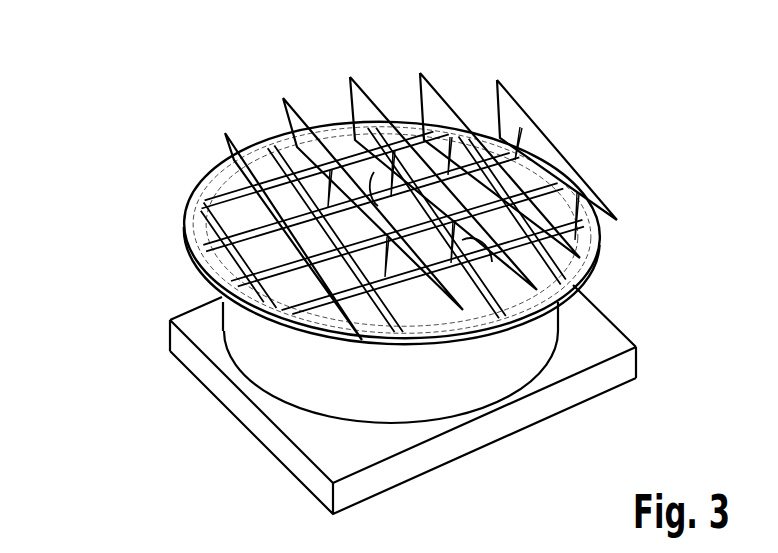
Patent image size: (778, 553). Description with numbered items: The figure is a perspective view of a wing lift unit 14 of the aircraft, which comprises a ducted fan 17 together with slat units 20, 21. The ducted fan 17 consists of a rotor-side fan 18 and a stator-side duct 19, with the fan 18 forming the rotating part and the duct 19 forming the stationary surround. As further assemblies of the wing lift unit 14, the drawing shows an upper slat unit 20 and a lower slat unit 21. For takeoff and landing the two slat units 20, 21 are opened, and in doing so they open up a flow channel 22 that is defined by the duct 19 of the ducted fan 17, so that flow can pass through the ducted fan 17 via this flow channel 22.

The wing lift unit 14 is at (600, 103).
The ducted fan 17 is at (83, 232).
The rotor-side fan 18 is at (297, 203).
The stator-side duct 19 is at (268, 340).
The upper slat unit 20 is at (281, 88).
The lower slat unit 21 is at (600, 336).
The flow channel 22 is at (338, 144).